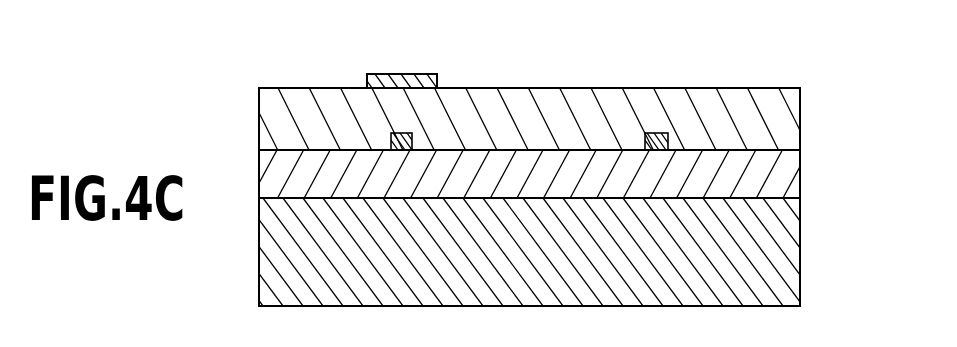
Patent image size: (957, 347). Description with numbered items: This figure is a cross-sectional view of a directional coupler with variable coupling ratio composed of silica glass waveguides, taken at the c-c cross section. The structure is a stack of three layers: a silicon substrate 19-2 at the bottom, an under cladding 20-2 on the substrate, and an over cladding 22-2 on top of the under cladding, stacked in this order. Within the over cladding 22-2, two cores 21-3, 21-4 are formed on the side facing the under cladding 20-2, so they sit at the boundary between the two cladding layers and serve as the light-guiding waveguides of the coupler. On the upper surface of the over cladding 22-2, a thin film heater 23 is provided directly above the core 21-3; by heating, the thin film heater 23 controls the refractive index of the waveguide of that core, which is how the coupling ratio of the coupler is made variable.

The silicon substrate 19-2 is at (790, 260).
The under cladding 20-2 is at (790, 171).
The over cladding 22-2 is at (557, 97).
The thin film heater 23 is at (403, 79).
The core 21-3 is at (398, 132).
The core 21-4 is at (660, 132).